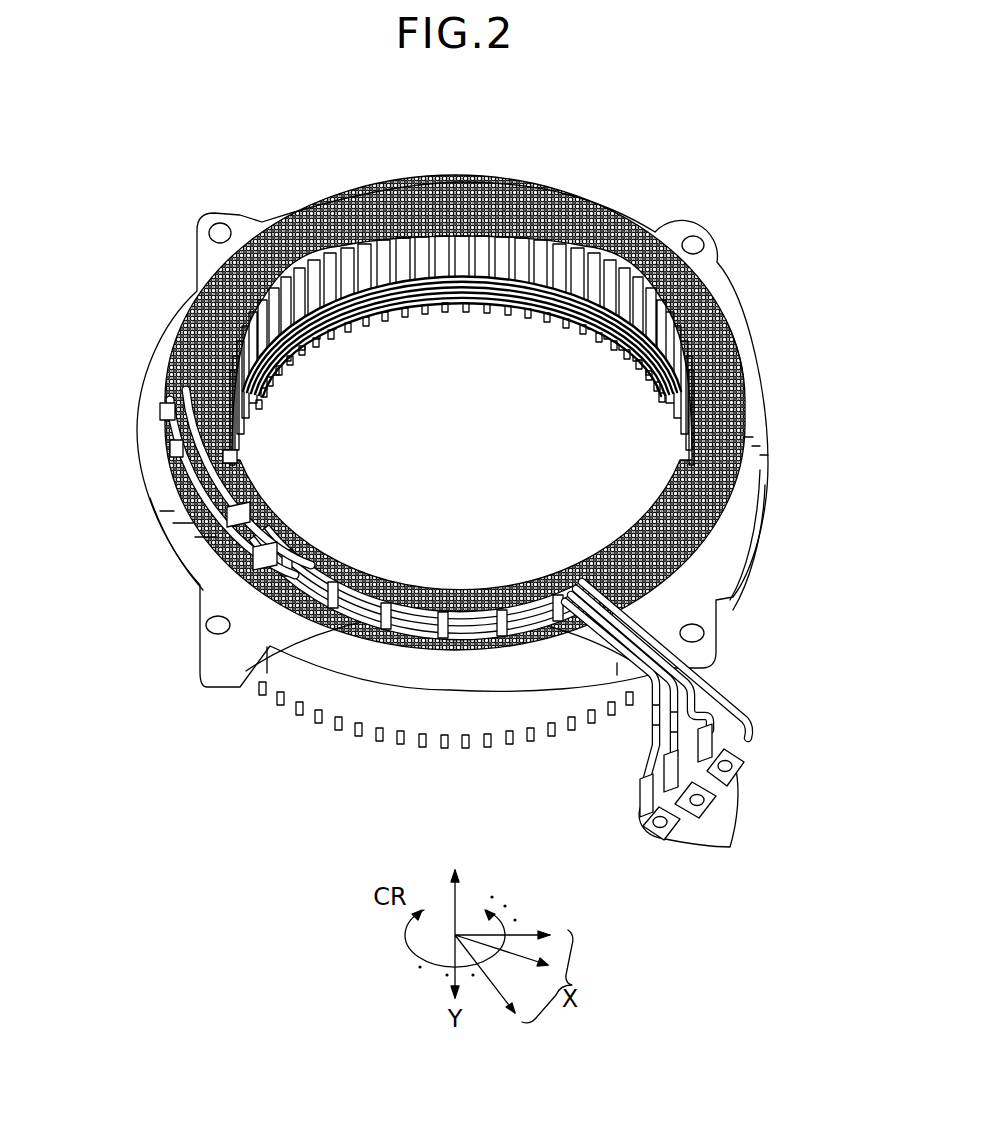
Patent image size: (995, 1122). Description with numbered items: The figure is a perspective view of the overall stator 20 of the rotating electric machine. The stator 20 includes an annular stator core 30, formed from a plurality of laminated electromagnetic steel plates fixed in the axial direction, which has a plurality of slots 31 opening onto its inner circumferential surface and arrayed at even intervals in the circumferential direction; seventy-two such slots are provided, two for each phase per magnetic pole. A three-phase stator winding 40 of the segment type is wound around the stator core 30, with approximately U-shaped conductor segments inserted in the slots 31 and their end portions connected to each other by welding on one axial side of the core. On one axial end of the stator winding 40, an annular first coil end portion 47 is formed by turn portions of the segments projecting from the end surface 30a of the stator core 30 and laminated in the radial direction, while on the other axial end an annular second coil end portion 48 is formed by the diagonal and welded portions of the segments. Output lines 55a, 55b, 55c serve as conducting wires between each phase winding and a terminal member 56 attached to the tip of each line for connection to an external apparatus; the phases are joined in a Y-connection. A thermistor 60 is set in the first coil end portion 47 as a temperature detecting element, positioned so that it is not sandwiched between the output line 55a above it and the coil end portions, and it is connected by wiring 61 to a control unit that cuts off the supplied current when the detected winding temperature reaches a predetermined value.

The stator 20 is at (305, 168).
The stator core 30 is at (160, 326).
The end surface 30a is at (170, 509).
The slots 31 is at (432, 248).
The stator winding 40 is at (598, 207).
The first coil end portion 47 is at (735, 342).
The second coil end portion 48 is at (372, 749).
The output line 55a is at (648, 676).
The output line 55b is at (652, 722).
The output line 55c is at (705, 718).
The terminal member 56 is at (691, 801).
The thermistor 60 is at (285, 612).
The wiring 61 is at (512, 605).